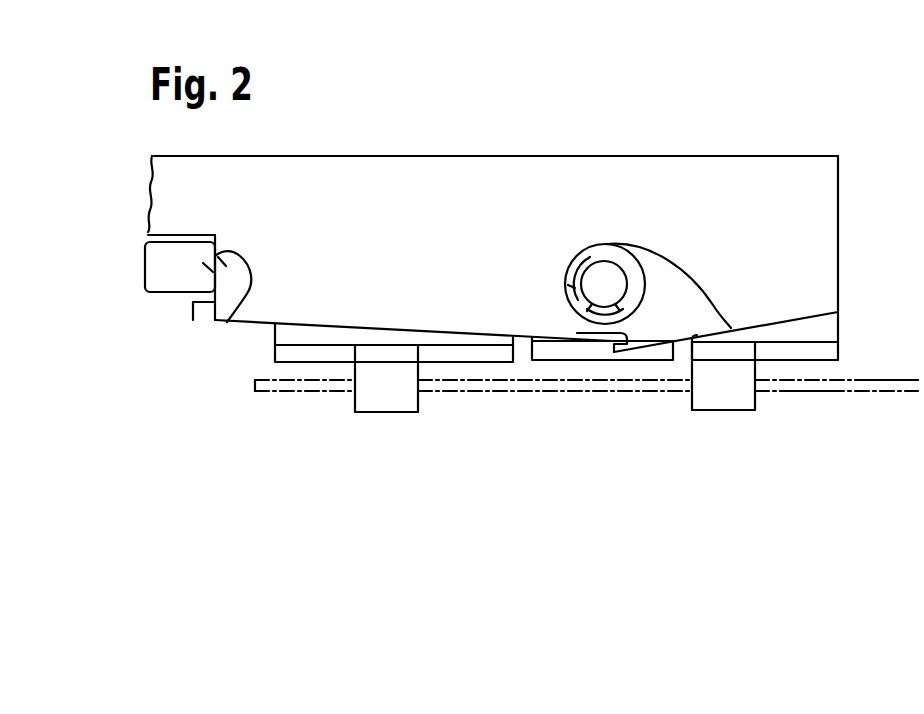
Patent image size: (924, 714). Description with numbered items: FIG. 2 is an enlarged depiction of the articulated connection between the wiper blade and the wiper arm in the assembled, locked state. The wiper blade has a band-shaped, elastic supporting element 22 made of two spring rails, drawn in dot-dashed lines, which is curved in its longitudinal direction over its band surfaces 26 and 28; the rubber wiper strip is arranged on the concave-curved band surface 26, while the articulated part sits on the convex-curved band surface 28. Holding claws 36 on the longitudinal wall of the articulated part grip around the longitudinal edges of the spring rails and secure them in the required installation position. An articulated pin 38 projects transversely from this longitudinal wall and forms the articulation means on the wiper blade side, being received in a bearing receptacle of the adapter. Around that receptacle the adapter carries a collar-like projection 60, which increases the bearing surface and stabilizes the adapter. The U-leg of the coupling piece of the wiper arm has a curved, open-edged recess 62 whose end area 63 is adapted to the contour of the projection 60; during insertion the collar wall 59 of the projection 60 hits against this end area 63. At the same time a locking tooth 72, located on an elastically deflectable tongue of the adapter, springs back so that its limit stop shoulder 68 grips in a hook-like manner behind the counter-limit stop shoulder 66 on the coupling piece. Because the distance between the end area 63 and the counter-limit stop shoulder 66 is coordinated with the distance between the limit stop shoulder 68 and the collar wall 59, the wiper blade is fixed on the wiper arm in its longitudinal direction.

The supporting element 22 is at (808, 400).
The concave-curved band surface 26 is at (880, 392).
The convex-curved band surface 28 is at (878, 380).
The holding claws 36 is at (368, 400).
The articulated pin 38 is at (599, 283).
The collar wall 59 is at (565, 308).
The collar-like projection 60 is at (633, 297).
The recess 62 is at (663, 268).
The end area of the recess 63 is at (590, 252).
The counter-limit stop shoulder 66 is at (213, 271).
The limit stop shoulder 68 is at (227, 322).
The locking tooth 72 is at (160, 272).